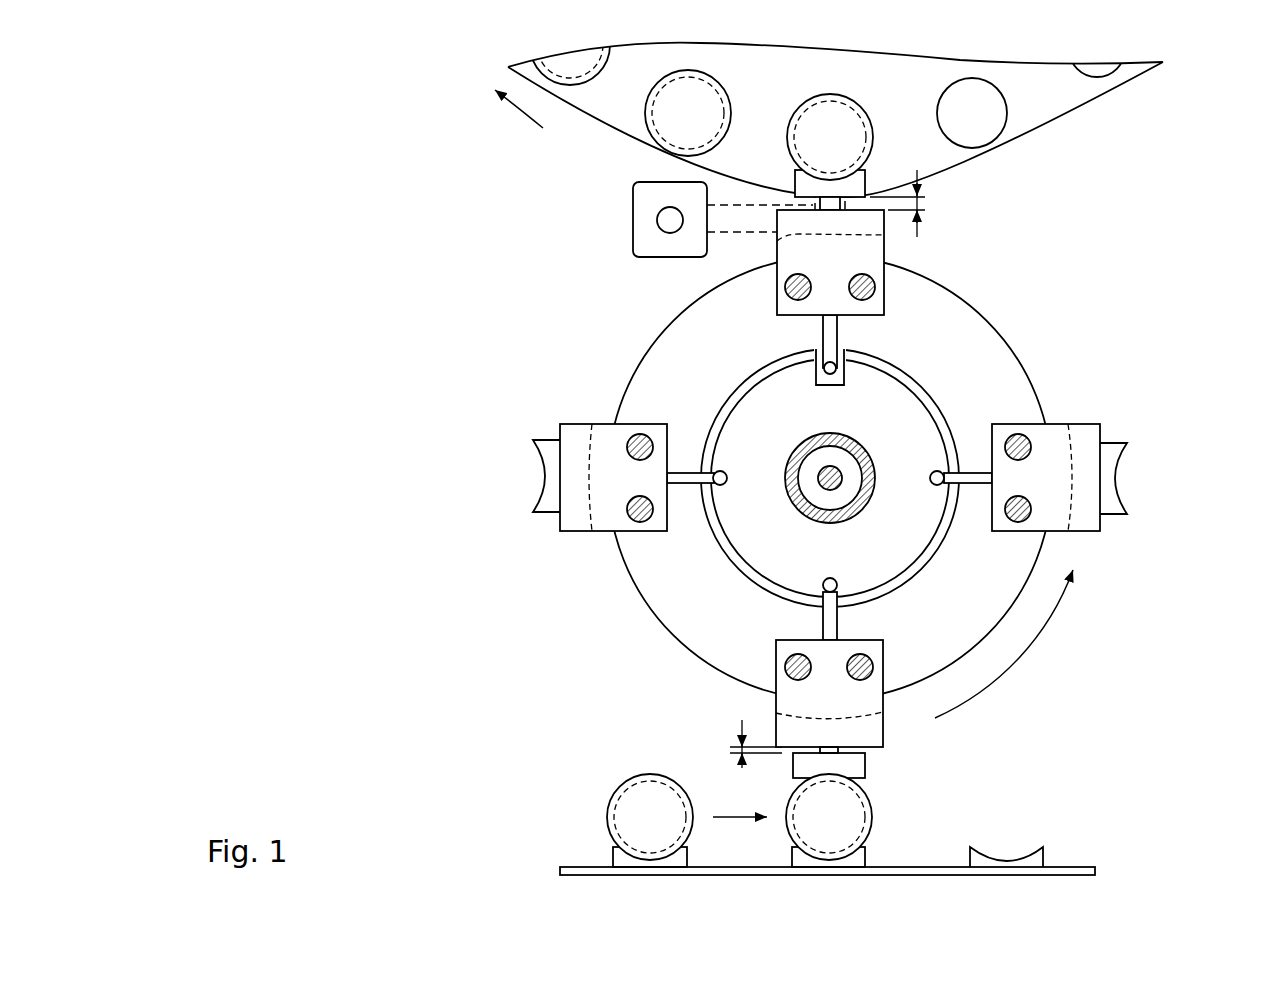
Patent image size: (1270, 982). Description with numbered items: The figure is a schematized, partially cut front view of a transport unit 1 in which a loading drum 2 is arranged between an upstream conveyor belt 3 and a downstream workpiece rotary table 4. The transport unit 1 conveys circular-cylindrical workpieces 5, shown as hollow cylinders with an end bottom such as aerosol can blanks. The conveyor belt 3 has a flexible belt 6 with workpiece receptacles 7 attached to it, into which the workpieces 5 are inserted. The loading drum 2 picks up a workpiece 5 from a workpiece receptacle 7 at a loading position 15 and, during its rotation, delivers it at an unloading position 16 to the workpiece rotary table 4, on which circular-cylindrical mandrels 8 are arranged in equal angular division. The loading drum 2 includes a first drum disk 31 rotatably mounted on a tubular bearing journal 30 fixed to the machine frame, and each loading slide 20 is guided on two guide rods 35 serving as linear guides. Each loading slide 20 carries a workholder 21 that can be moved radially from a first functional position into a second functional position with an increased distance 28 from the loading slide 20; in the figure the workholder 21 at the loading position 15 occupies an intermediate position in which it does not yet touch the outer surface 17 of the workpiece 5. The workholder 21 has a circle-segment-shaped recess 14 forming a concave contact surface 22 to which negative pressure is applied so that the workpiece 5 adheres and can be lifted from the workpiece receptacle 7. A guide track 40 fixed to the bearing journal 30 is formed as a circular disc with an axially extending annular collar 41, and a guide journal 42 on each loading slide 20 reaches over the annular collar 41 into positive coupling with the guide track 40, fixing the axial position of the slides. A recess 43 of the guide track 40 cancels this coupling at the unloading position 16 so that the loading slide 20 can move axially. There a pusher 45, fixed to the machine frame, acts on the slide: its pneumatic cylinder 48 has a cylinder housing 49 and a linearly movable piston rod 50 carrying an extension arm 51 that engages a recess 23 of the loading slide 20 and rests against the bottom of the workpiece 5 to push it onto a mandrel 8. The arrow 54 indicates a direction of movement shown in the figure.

The transport unit 1 is at (270, 180).
The loading drum 2 is at (848, 473).
The conveyor belt 3 is at (1085, 845).
The workpiece rotary table 4 is at (1144, 114).
The workpiece 5 is at (640, 800).
The flexible belt 6 is at (577, 868).
The workpiece receptacle 7 is at (620, 858).
The mandrel 8 is at (997, 125).
The recess 14 is at (555, 420).
The loading position 15 is at (883, 787).
The unloading position 16 is at (952, 218).
The outer surface 17 is at (645, 770).
The loading slide 20 is at (605, 428).
The workholder 21 is at (548, 445).
The contact surface 22 is at (545, 468).
The recess 23 is at (573, 437).
The distance 28 is at (923, 197).
The bearing journal 30 is at (810, 447).
The first drum disk 31 is at (1018, 405).
The guide rod 35 is at (640, 446).
The guide track 40 is at (760, 548).
The annular collar 41 is at (920, 563).
The guide journal 42 is at (830, 622).
The recess 43 is at (833, 470).
The pusher 45 is at (622, 222).
The pneumatic cylinder 48 is at (643, 232).
The cylinder housing 49 is at (640, 245).
The piston rod 50 is at (668, 218).
The extension arm 51 is at (742, 222).
The removal direction 54 is at (572, 100).